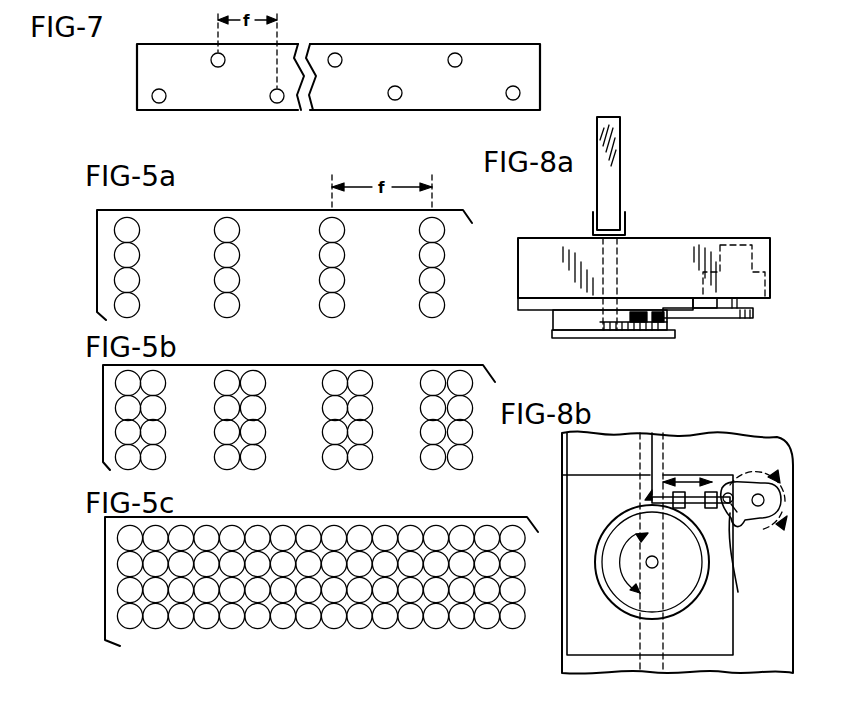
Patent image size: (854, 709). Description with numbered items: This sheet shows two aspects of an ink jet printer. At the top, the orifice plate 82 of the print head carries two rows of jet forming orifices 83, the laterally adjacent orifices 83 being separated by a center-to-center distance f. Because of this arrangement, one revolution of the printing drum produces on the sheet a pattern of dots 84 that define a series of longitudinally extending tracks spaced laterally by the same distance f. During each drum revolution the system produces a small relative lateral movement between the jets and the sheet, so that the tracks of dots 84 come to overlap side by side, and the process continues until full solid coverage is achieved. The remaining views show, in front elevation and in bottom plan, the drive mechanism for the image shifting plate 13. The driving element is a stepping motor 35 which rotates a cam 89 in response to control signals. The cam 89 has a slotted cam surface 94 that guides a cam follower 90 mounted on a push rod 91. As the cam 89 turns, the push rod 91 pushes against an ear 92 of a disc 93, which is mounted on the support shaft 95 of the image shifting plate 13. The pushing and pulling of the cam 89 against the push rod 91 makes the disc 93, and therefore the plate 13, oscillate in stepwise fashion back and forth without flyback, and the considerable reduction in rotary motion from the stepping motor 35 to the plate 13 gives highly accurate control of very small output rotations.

In FIG. 8a, the image shifting plate 13 is at (613, 187).
In FIG. 8b, the image shifting plate 13 is at (665, 452).
In FIG. 8a, the stepping motor 35 is at (735, 255).
In FIG. 8b, the stepping motor 35 is at (768, 478).
In FIG. 7, the orifice plate 82 is at (527, 64).
In FIG. 7, the holes 83 is at (395, 90).
In FIG. 5a, the dots 84 is at (424, 235).
In FIG. 5b, the dots 84 is at (427, 411).
In FIG. 5c, the dots 84 is at (385, 627).
In FIG. 8a, the cam 89 is at (730, 318).
In FIG. 8b, the cam 89 is at (748, 512).
In FIG. 8a, the cam follower 90 is at (704, 320).
In FIG. 8b, the cam follower 90 is at (728, 492).
In FIG. 8a, the push rod 91 is at (692, 320).
In FIG. 8b, the push rod 91 is at (716, 490).
In FIG. 8b, the ear 92 is at (650, 490).
In FIG. 8a, the disc 93 is at (585, 328).
In FIG. 8b, the disc 93 is at (625, 530).
In FIG. 8b, the slotted cam surface 94 is at (736, 565).
In FIG. 8a, the support shaft 95 is at (613, 262).
In FIG. 8b, the support shaft 95 is at (646, 562).